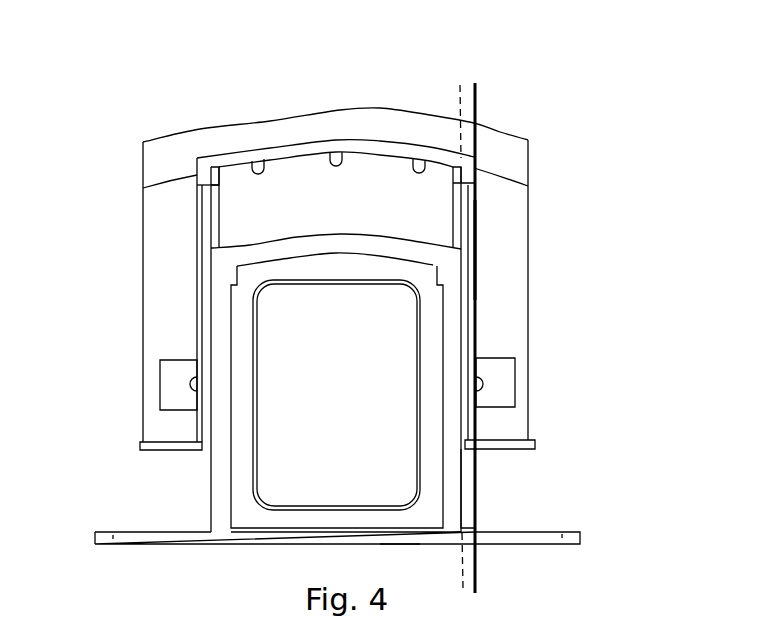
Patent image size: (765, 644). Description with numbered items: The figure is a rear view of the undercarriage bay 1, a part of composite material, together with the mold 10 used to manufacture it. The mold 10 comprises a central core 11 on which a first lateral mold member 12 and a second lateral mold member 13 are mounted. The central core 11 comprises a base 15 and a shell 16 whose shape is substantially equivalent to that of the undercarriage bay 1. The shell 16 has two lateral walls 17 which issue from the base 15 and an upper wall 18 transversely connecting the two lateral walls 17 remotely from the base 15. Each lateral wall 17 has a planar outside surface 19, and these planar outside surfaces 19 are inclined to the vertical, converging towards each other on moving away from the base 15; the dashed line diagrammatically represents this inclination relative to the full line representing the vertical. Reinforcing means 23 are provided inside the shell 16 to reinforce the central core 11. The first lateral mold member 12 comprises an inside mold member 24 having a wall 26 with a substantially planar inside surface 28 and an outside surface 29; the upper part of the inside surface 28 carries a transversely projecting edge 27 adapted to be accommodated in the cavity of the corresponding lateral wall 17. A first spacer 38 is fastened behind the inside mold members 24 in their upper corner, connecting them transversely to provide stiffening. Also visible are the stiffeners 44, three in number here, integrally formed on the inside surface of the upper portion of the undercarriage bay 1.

The undercarriage bay 1 is at (578, 131).
The mold 10 is at (98, 516).
The central core 11 is at (401, 560).
The first lateral mold member 12 is at (190, 459).
The second lateral mold member 13 is at (482, 461).
The base 15 is at (147, 538).
The shell 16 is at (453, 478).
The lateral wall 17 is at (472, 518).
The upper wall 18 is at (386, 250).
The planar outside surface 19 is at (480, 502).
The reinforcing means 23 is at (243, 445).
The inside mold member 24 is at (205, 259).
The wall 26 is at (205, 316).
The edge 27 is at (200, 200).
The inside surface 28 is at (448, 221).
The outside surface 29 is at (479, 258).
The first spacer 38 is at (297, 147).
The stiffeners 44 is at (430, 163).